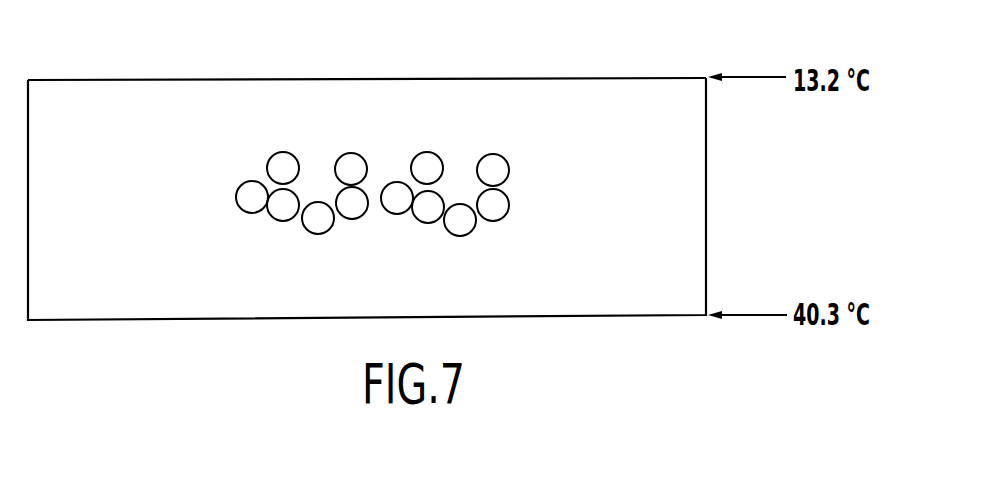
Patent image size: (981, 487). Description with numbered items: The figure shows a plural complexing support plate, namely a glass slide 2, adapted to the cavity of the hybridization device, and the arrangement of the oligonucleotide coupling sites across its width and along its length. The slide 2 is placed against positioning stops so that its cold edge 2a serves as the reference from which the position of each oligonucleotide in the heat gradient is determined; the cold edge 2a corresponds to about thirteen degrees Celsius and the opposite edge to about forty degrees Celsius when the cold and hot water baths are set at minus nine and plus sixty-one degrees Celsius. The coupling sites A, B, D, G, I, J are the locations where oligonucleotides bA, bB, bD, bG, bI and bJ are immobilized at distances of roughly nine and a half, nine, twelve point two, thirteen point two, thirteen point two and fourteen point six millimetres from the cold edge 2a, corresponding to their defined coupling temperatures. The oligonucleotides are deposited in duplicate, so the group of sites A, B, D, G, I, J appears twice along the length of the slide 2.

The glass slide 2 is at (507, 104).
The cold edge of the slide 2a is at (240, 80).
The coupling site of oligonucleotide bA A is at (422, 169).
The coupling site of oligonucleotide bB B is at (355, 168).
The coupling site of oligonucleotide bD D is at (324, 197).
The coupling site of oligonucleotide bG G is at (355, 206).
The coupling site of oligonucleotide bI I is at (422, 204).
The coupling site of oligonucleotide bJ J is at (389, 219).